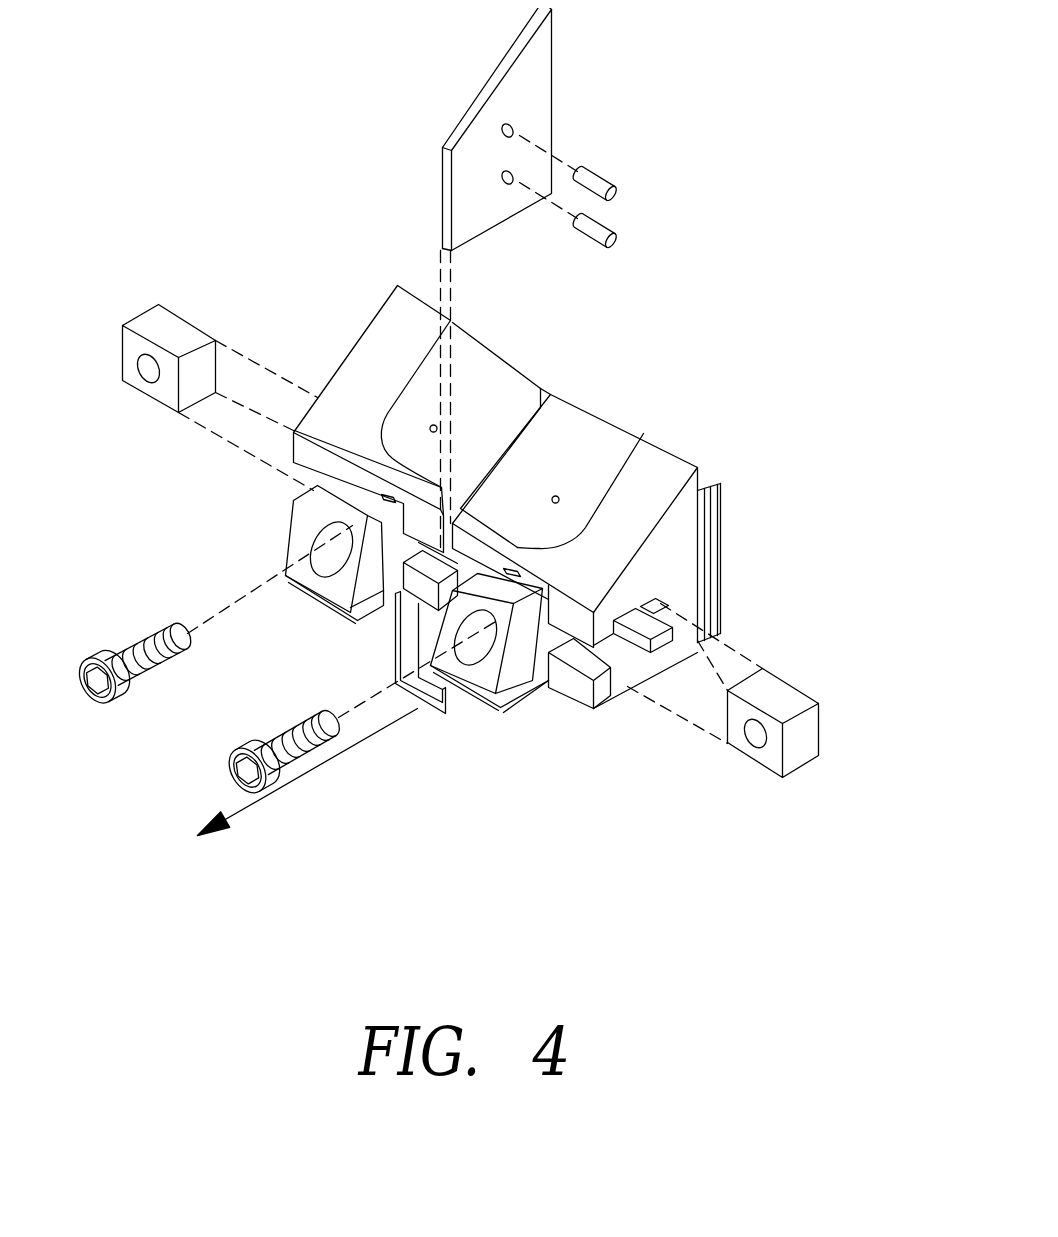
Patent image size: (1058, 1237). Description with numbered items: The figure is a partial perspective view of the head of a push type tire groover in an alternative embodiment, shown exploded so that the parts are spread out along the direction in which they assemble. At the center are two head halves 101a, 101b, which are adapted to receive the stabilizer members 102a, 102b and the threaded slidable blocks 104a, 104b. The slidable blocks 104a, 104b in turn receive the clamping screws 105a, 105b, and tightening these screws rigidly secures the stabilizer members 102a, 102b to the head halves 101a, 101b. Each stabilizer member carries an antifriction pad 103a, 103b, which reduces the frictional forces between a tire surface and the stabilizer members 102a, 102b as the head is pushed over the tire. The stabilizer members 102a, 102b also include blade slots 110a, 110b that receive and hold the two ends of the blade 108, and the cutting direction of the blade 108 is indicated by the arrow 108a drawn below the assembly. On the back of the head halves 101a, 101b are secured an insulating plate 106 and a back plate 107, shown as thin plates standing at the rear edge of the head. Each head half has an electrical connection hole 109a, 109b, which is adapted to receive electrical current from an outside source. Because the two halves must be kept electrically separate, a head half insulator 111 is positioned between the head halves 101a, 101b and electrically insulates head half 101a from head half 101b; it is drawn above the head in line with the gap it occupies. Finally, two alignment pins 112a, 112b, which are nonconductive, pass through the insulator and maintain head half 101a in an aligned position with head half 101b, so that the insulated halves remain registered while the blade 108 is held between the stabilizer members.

The head half 101a is at (409, 321).
The head half 101b is at (647, 480).
The stabilizer member 102a is at (335, 498).
The stabilizer member 102b is at (480, 683).
The antifriction pad 103a is at (386, 613).
The antifriction pad 103b is at (505, 672).
The threaded slidable block 104a is at (167, 328).
The threaded slidable block 104b is at (777, 697).
The clamping screw 105a is at (93, 658).
The clamping screw 105b is at (243, 747).
The insulating plate 106 is at (700, 525).
The back plate 107 is at (710, 563).
The blade 108 is at (435, 690).
The arrow 108a is at (333, 758).
The electrical connection hole 109a is at (431, 424).
The electrical connection hole 109b is at (556, 495).
The blade slot 110a is at (381, 496).
The blade slot 110b is at (512, 574).
The head half insulator 111 is at (530, 75).
The alignment pin 112a is at (597, 180).
The alignment pin 112b is at (597, 227).